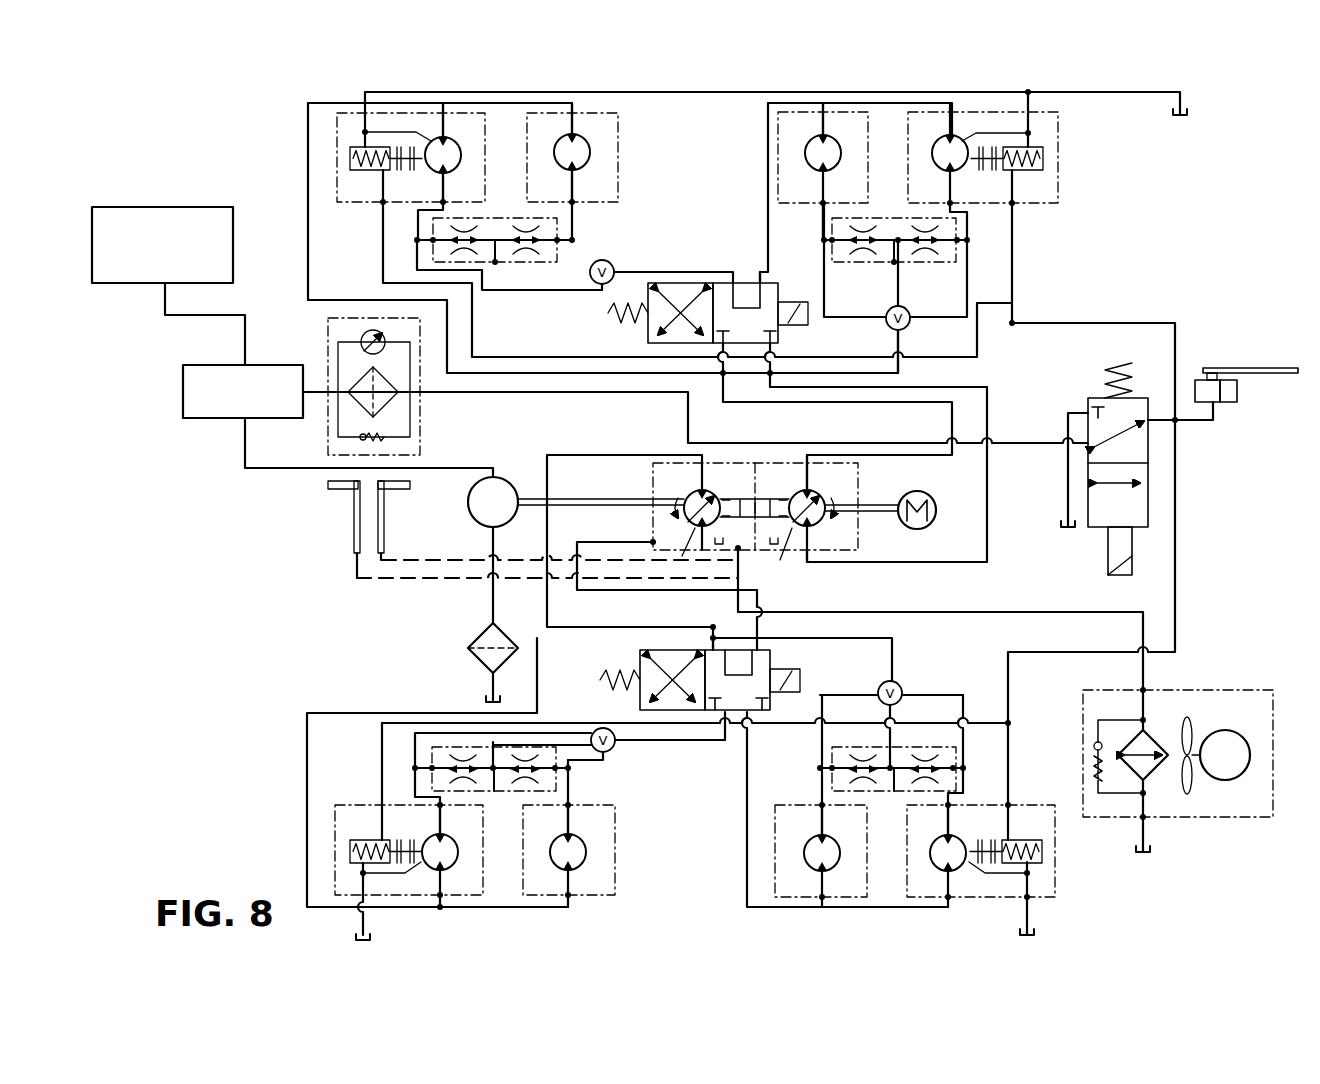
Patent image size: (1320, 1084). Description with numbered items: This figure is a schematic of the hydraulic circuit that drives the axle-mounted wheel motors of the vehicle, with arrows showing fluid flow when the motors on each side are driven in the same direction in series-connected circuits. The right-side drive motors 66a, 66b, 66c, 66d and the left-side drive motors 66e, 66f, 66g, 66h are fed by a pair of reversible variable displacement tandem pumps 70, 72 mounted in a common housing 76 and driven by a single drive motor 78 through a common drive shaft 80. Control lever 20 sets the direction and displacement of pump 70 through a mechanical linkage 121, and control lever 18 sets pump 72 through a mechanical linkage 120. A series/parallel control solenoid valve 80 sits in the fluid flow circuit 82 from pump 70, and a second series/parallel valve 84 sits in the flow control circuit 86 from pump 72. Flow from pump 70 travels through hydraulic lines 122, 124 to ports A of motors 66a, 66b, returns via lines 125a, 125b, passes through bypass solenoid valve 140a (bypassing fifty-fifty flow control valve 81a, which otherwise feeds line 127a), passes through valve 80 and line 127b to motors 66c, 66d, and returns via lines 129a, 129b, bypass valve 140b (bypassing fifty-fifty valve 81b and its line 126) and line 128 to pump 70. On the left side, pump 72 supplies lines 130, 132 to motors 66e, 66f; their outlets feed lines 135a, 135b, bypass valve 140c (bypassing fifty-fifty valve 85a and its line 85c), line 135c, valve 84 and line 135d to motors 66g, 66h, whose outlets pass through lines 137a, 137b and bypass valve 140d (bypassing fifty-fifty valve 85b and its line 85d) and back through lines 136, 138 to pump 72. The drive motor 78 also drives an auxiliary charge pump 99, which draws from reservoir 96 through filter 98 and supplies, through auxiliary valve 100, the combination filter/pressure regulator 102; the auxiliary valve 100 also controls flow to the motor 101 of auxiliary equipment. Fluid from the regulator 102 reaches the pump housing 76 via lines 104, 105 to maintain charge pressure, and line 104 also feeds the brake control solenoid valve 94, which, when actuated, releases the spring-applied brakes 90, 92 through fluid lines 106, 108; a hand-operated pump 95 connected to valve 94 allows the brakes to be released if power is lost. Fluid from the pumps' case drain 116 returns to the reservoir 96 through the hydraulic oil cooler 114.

The auxiliary equipment motor 101 is at (160, 228).
The auxiliary valve 100 is at (241, 376).
The combination filter/pressure regulator 102 is at (351, 384).
The hydraulic line 104 is at (695, 417).
The hydraulic line 124 is at (576, 238).
The auxiliary charge pump 99 is at (391, 520).
The filter 98 is at (482, 652).
The reservoir 96 is at (783, 805).
The control lever 20 is at (330, 529).
The control lever 18 is at (399, 520).
The mechanical linkage 120 is at (560, 535).
The mechanical linkage 121 is at (547, 603).
The hydraulic line 138 is at (661, 551).
The case drain 116 is at (785, 581).
The hydraulic line 130 is at (630, 552).
The flow control circuit 86 is at (940, 632).
The hydraulic line 132 is at (431, 772).
The common housing 76 is at (755, 479).
The reversible variable displacement pump 72 is at (711, 516).
The reversible variable displacement pump 70 is at (806, 508).
The hydraulic line 105 is at (782, 449).
The drive motor 78 is at (936, 504).
The series/parallel control solenoid valve 80 is at (755, 393).
The hydraulic line 122 is at (837, 408).
The hydraulic line 128 is at (903, 467).
The bypass solenoid valve 140a is at (675, 271).
The line 127a is at (509, 286).
The fluid line 108 is at (697, 263).
The line 125a is at (377, 206).
The line 125b is at (629, 205).
The 50-50 flow control valve 81a is at (531, 240).
The hydraulic drive motor 66a is at (435, 152).
The hydraulic drive motor 66b is at (598, 152).
The hydraulic drive motor 66c is at (790, 171).
The hydraulic drive motor 66d is at (923, 153).
The hydraulic actuated brake 92 is at (1005, 157).
The fluid flow circuit 82 is at (1093, 295).
The line 127b is at (743, 193).
The fluid flow line 129a is at (767, 224).
The fluid flow line 129b is at (1015, 224).
The 50-50 flow control valve 81b is at (872, 242).
The line 126 is at (929, 273).
The bypass solenoid valve 140b is at (902, 288).
The brake control solenoid valve 94 is at (1137, 456).
The hand-operated pump 95 is at (1246, 358).
The fluid line 106 is at (1118, 571).
The series/parallel flow control solenoid valve 84 is at (726, 665).
The hydraulic line 136 is at (833, 658).
The line 85d is at (850, 687).
The bypass solenoid valve 140d is at (929, 717).
The 50-50 flow control valve 85b is at (891, 746).
The line 137a is at (791, 765).
The line 137b is at (1009, 765).
The 50-50 flow control valve 85a is at (478, 731).
The line 85c is at (542, 725).
The bypass solenoid valve 140c is at (616, 722).
The line 135c is at (670, 758).
The line 135b is at (622, 797).
The line 135a is at (380, 801).
The hydraulic drive motor 66e is at (429, 829).
The hydraulic drive motor 66f is at (597, 856).
The hydraulic drive motor 66g is at (782, 856).
The hydraulic drive motor 66h is at (914, 856).
The hydraulic actuated brake 90 is at (1012, 829).
The line 135d is at (845, 827).
The hydraulic oil cooler 114 is at (1201, 766).